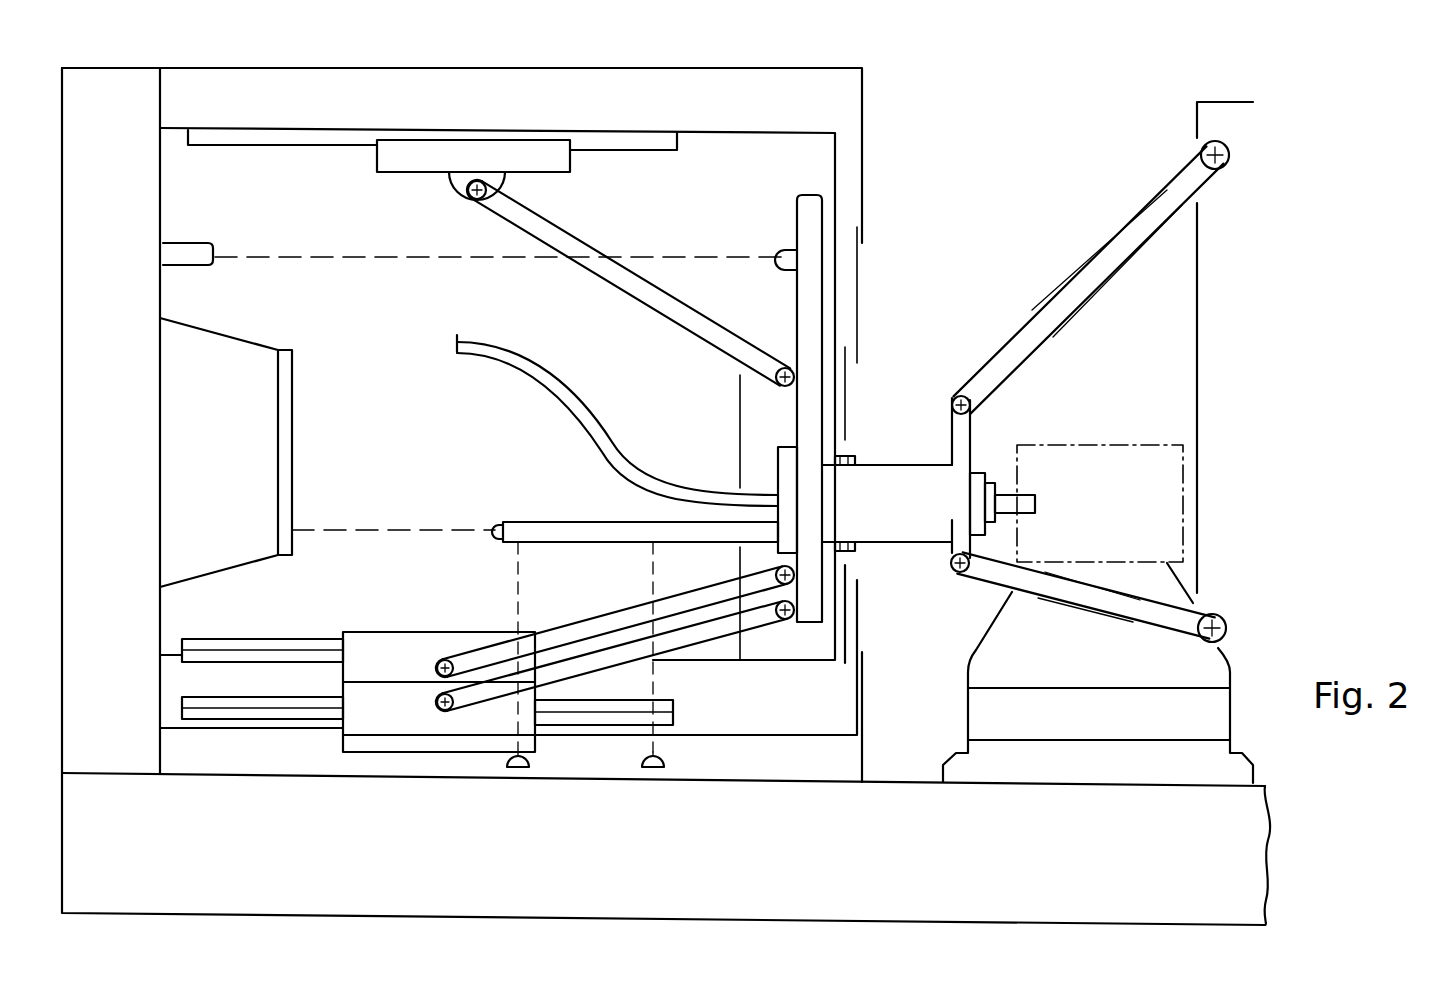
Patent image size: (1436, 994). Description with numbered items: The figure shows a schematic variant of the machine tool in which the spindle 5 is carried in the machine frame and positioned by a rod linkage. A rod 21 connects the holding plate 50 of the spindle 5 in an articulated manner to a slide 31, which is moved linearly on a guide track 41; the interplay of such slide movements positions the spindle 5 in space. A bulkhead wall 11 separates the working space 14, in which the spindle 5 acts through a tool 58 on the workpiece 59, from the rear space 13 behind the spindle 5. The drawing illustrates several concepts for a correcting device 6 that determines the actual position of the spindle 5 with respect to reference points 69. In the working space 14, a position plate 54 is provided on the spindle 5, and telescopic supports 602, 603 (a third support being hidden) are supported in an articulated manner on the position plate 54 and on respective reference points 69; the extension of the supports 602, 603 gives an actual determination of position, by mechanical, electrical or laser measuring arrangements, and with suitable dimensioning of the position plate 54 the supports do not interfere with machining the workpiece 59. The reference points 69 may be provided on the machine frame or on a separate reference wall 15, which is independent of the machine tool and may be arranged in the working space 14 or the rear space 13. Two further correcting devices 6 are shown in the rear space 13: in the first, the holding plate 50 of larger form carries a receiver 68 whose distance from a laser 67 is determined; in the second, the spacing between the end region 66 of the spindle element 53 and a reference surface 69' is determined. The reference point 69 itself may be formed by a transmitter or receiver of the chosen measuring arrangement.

The spindle 5 is at (884, 480).
The correcting device 6 is at (641, 227).
The bulkhead wall 11 is at (864, 192).
The rear space 13 is at (440, 404).
The working space 14 is at (972, 280).
The reference wall 15 is at (1242, 424).
The rod 21 is at (580, 240).
The slide 31 is at (415, 148).
The guide track 41 is at (620, 135).
The holding plate 50 is at (805, 195).
The spindle element 53 is at (508, 525).
The position plate 54 is at (958, 438).
The tool 58 is at (1007, 500).
The workpiece 59 is at (1110, 455).
The rod tip 66 is at (497, 521).
The laser 67 is at (188, 244).
The receiver 68 is at (780, 255).
The reference point 69 is at (1245, 391).
The reference surface 69' is at (270, 452).
The telescopic support 602 is at (1120, 276).
The telescopic support 603 is at (1083, 598).